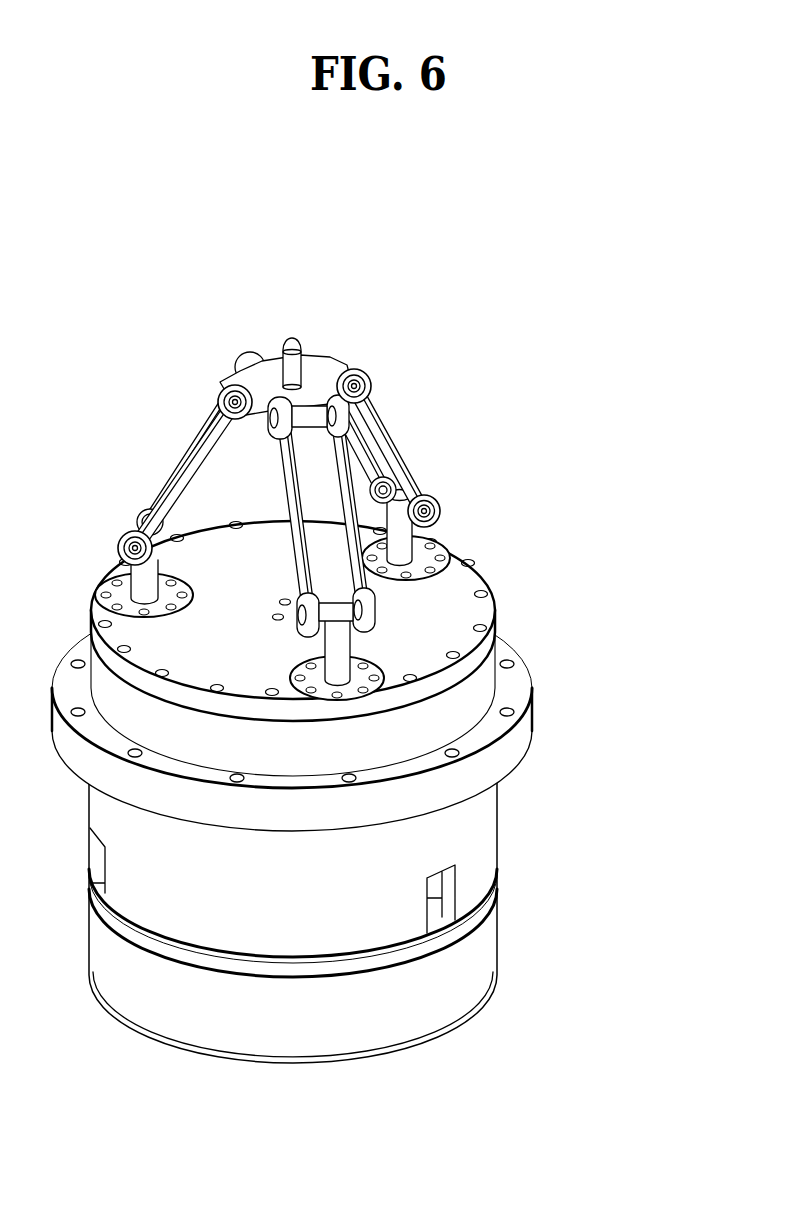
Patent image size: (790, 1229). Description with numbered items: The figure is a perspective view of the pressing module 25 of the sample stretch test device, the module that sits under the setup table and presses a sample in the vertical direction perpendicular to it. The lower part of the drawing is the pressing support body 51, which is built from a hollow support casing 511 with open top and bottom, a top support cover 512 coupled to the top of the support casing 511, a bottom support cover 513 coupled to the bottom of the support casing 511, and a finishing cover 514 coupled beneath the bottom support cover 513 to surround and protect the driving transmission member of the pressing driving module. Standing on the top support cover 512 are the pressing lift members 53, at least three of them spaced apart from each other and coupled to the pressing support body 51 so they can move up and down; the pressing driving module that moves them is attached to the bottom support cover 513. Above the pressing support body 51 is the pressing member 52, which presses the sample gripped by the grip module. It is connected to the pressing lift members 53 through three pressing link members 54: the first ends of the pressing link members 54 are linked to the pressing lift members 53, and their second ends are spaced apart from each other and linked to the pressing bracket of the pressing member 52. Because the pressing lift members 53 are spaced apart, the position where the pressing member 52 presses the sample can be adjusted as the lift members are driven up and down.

The pressing module 25 is at (307, 470).
The pressing support body 51 is at (373, 792).
The support casing 511 is at (517, 740).
The top support cover 512 is at (364, 648).
The bottom support cover 513 is at (503, 903).
The finishing cover 514 is at (487, 950).
The pressing member 52 is at (292, 363).
The pressing lift member 53 is at (403, 542).
The pressing link member 54 is at (393, 442).